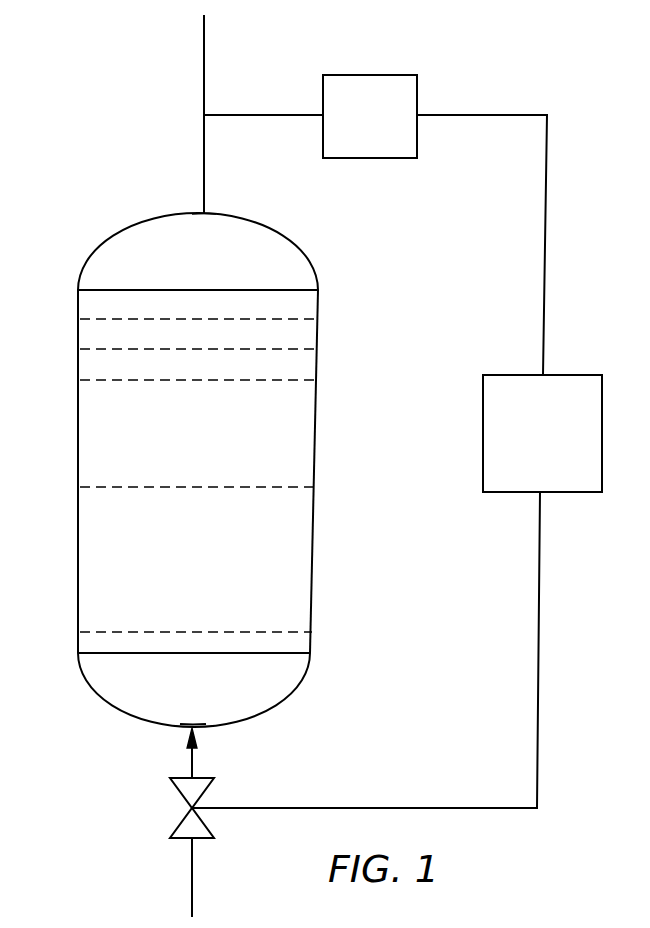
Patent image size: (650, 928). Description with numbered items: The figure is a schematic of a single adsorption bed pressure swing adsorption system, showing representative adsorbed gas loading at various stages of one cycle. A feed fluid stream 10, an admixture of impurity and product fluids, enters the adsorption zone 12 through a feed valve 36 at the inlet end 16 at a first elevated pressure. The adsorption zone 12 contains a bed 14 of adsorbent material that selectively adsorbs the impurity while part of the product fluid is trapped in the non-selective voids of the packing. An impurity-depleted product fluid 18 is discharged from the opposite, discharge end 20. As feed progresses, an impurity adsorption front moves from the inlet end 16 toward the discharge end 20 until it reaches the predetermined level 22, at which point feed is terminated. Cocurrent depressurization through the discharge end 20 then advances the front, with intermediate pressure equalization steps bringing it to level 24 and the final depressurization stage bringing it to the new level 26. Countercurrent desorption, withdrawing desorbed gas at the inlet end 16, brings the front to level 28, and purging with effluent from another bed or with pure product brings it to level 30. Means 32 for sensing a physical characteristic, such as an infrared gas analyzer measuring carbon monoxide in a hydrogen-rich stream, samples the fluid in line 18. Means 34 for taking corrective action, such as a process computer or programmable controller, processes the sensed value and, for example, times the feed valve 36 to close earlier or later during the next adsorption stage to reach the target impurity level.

The feed fluid stream 10 is at (188, 758).
The adsorption zone 12 is at (70, 555).
The bed 14 is at (210, 438).
The inlet end 16 is at (200, 729).
The impurity-depleted product fluid 18 is at (204, 160).
The discharge end 20 is at (204, 212).
The predetermined level 22 is at (275, 380).
The level 24 is at (275, 349).
The new level 26 is at (278, 319).
The level 28 is at (254, 487).
The level 30 is at (265, 632).
The means for sensing a physical characteristic 32 is at (380, 132).
The means for taking corrective action 34 is at (559, 446).
The feed valve 36 is at (176, 822).